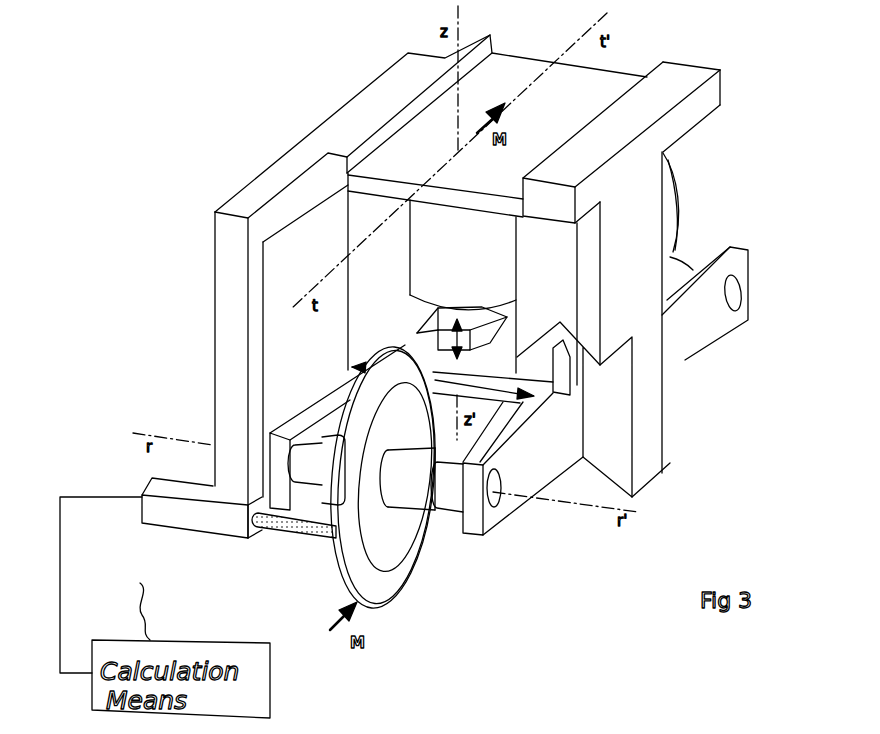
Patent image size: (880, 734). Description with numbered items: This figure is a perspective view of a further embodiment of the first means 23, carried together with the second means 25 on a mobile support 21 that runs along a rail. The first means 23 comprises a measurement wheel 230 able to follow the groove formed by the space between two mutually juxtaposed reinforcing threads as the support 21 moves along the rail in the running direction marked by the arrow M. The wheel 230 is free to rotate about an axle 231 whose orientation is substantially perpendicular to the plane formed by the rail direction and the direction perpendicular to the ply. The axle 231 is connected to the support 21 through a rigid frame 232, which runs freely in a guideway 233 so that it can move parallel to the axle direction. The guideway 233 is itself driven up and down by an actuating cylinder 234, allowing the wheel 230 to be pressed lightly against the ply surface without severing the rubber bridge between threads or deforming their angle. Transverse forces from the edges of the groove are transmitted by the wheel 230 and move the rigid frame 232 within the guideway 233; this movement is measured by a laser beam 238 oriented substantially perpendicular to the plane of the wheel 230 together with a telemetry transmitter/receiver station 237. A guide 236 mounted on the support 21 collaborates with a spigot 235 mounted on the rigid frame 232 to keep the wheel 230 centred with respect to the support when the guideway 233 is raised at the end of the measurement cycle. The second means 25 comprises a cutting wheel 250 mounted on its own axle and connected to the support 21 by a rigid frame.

The mobile support 21 is at (365, 108).
The first means 23 is at (197, 337).
The second means 25 is at (737, 185).
The cutting wheel 250 is at (667, 202).
The measurement wheel 230 is at (347, 553).
The axle 231 is at (443, 490).
The rigid frame 232 is at (490, 518).
The guideway 233 is at (427, 342).
The actuating cylinder 234 is at (433, 260).
The spigot 235 is at (558, 377).
The guide 236 is at (590, 352).
The telemetry transmitter/receiver station 237 is at (197, 517).
The laser beam 238 is at (285, 527).